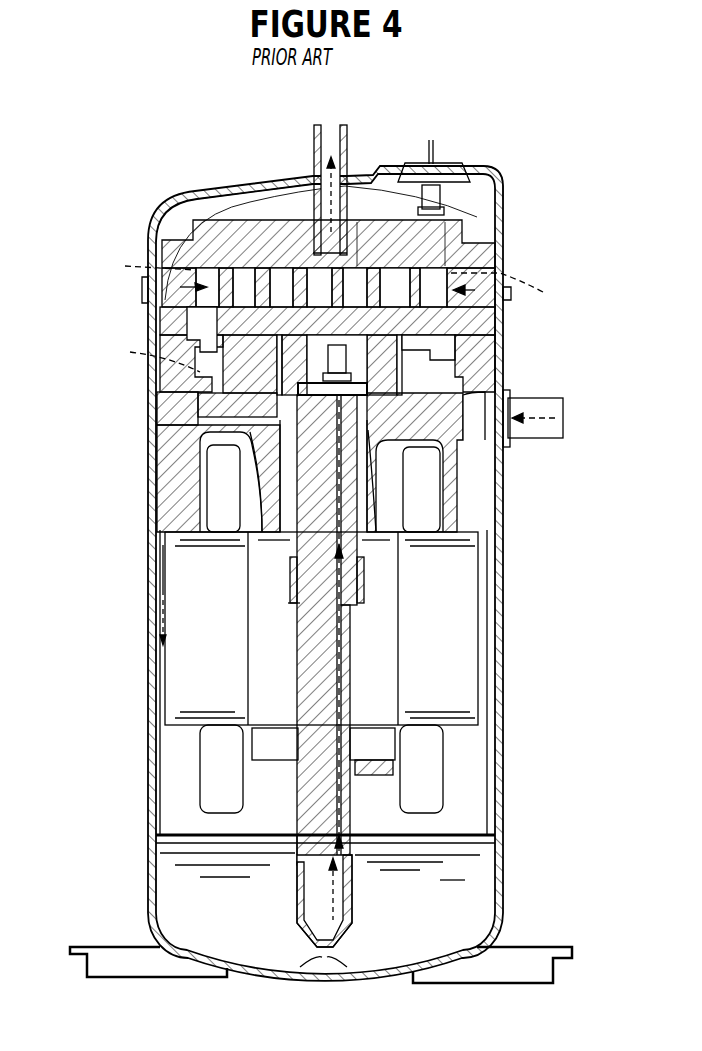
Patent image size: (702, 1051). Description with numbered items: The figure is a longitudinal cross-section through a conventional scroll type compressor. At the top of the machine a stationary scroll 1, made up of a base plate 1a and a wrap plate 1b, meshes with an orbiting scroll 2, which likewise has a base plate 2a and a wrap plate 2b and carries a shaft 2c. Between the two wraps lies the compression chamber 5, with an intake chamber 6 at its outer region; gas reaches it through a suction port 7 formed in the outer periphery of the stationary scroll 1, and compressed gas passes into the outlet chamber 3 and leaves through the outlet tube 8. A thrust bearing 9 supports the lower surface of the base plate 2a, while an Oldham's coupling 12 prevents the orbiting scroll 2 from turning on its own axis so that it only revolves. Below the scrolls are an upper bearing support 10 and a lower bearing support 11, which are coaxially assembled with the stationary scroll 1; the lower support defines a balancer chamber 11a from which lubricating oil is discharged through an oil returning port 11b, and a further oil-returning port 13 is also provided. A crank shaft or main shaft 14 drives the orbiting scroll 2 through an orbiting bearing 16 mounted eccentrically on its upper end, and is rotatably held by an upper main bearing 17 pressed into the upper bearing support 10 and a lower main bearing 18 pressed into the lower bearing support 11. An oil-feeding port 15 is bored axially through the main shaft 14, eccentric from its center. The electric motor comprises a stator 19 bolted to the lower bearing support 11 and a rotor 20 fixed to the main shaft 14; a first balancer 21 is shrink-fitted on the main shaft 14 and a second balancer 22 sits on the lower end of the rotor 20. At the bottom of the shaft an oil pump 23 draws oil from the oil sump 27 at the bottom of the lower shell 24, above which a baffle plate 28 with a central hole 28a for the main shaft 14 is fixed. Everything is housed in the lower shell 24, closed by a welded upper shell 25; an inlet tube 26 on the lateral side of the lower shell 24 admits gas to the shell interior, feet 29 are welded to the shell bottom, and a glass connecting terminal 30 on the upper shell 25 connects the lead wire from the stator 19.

The stationary scroll 1 is at (498, 250).
The base plate of the stationary scroll 1a is at (362, 236).
The wrap plate of the stationary scroll 1b is at (415, 290).
The orbiting scroll 2 is at (490, 332).
The base plate of the orbiting scroll 2a is at (498, 272).
The wrap plate of the orbiting scroll 2b is at (235, 224).
The shaft for the orbiting scroll 2c is at (340, 345).
The outlet chamber 3 is at (292, 270).
The compression chamber 5 is at (268, 265).
The intake chamber 6 is at (166, 235).
The suction port 7 is at (335, 277).
The outlet tube 8 is at (348, 152).
The thrust bearing 9 is at (190, 340).
The upper bearing support 10 is at (482, 374).
The lower bearing support 11 is at (322, 462).
The balancer chamber 11a is at (412, 425).
The oil returning port 11b is at (200, 410).
The Oldham's coupling 12 is at (460, 352).
The oil-returning port 13 is at (159, 339).
The crank shaft 14 is at (347, 650).
The oil-feeding port 15 is at (347, 684).
The orbiting bearing 16 is at (334, 395).
The upper main bearing 17 is at (256, 432).
The lower main bearing 18 is at (292, 587).
The stator 19 is at (468, 557).
The rotor 20 is at (392, 602).
The first balancer 21 is at (198, 400).
The second balancer 22 is at (393, 767).
The oil pump 23 is at (353, 906).
The lower shell 24 is at (490, 713).
The upper shell 25 is at (507, 178).
The inlet tube 26 is at (563, 432).
The oil sump 27 is at (478, 872).
The baffle plate 28 is at (462, 836).
The hole 28a is at (296, 835).
The feet 29 is at (543, 947).
The glass connecting terminal 30 is at (445, 165).